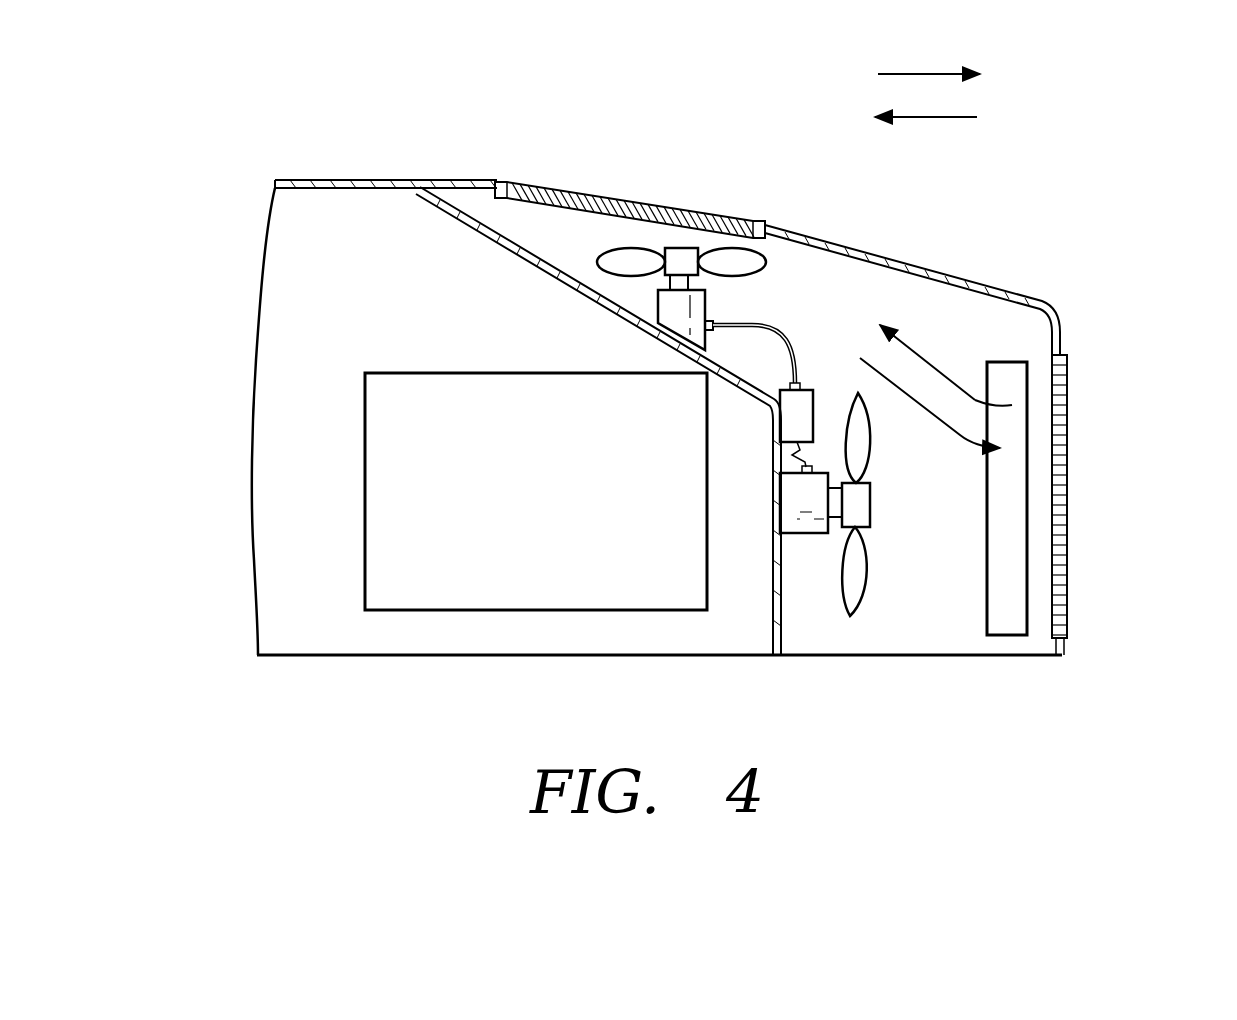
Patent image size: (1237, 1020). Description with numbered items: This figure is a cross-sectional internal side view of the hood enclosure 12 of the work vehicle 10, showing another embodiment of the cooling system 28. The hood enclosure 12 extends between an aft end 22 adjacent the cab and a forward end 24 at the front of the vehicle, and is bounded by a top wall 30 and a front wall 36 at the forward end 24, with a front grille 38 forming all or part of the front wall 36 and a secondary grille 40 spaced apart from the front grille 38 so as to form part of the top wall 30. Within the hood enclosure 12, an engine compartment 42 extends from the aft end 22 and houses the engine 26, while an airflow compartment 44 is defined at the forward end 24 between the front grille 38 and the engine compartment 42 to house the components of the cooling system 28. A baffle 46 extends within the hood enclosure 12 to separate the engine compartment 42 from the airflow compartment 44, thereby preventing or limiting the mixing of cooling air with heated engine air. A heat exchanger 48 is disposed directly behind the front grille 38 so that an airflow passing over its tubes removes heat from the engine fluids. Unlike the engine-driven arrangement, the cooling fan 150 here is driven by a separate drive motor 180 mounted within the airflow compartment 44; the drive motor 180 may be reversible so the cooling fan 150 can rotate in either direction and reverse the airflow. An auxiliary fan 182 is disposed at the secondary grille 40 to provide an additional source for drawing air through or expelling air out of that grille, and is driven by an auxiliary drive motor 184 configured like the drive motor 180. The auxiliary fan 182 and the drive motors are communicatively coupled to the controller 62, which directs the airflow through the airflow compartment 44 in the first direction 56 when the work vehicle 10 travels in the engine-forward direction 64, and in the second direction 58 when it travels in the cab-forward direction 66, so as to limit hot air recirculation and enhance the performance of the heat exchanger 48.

The work vehicle 10 is at (1120, 178).
The hood enclosure 12 is at (972, 268).
The aft end 22 is at (275, 182).
The forward end 24 is at (1043, 310).
The engine 26 is at (555, 499).
The cooling system 28 is at (928, 342).
The top wall 30 is at (840, 242).
The front wall 36 is at (1063, 651).
The front grille 38 is at (1060, 505).
The secondary grille 40 is at (650, 197).
The engine compartment 42 is at (410, 292).
The airflow compartment 44 is at (815, 315).
The baffle 46 is at (562, 278).
The heat exchanger 48 is at (1013, 420).
The first direction 56 is at (945, 382).
The second direction 58 is at (978, 426).
The controller 62 is at (793, 412).
The engine-forward direction 64 is at (905, 74).
The cab-forward direction 66 is at (953, 118).
The cooling fan 150 is at (858, 587).
The drive motor 180 is at (808, 513).
The auxiliary fan 182 is at (722, 262).
The auxiliary drive motor 184 is at (673, 310).